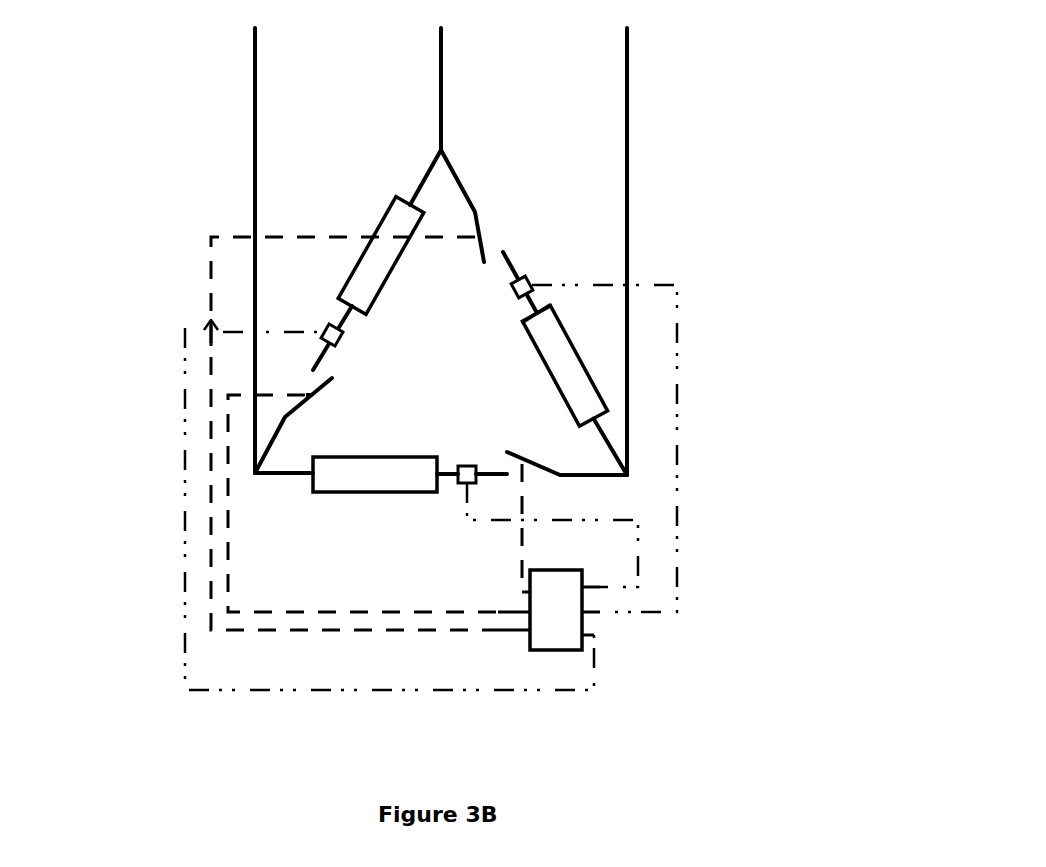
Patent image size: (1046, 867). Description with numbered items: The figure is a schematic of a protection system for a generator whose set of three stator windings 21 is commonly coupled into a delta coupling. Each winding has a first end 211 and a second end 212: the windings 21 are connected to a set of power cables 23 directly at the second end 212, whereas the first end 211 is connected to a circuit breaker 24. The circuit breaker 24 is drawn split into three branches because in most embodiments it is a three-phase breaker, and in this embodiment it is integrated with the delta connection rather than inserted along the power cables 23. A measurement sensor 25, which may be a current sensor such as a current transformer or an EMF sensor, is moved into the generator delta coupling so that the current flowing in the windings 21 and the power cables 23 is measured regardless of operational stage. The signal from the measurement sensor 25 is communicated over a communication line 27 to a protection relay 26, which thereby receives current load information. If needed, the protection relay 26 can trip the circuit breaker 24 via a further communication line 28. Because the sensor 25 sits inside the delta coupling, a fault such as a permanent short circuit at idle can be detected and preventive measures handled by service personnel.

The stator windings 21 is at (388, 202).
The first end 211 is at (532, 307).
The second end 212 is at (600, 433).
The power cables 23 is at (627, 138).
The circuit breaker 24 is at (480, 237).
The measurement sensor 25 is at (532, 283).
The protection relay 26 is at (550, 652).
The communication line 27 is at (185, 330).
The communication line 28 is at (210, 237).